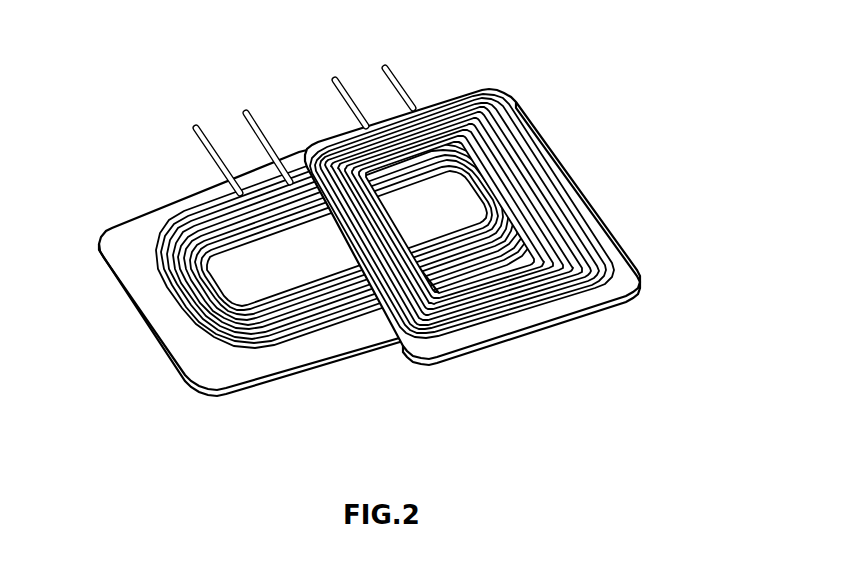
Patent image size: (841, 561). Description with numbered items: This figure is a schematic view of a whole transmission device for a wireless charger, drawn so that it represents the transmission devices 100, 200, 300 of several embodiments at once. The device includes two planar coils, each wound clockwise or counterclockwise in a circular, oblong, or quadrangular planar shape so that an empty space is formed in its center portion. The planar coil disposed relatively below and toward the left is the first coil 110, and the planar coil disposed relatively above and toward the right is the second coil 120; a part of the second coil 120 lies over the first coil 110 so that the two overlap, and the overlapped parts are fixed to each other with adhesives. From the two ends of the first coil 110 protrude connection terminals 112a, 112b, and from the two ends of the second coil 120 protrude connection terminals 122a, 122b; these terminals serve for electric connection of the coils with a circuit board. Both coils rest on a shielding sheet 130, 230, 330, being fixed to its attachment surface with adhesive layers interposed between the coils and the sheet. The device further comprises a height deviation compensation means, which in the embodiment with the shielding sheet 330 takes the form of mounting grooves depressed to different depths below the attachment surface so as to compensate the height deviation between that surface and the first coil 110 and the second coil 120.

The transmission device for a wireless charger 100 is at (389, 215).
The transmission device for a wireless charger 200 is at (389, 215).
The transmission device for a wireless charger 300 is at (568, 106).
The first coil 110 is at (170, 296).
The second coil 120 is at (563, 178).
The connection terminal 112a is at (197, 128).
The connection terminal 112b is at (247, 113).
The connection terminal 122a is at (335, 82).
The connection terminal 122b is at (387, 70).
The shielding sheet 130 is at (386, 247).
The shielding sheet 230 is at (386, 247).
The shielding sheet 330 is at (543, 340).